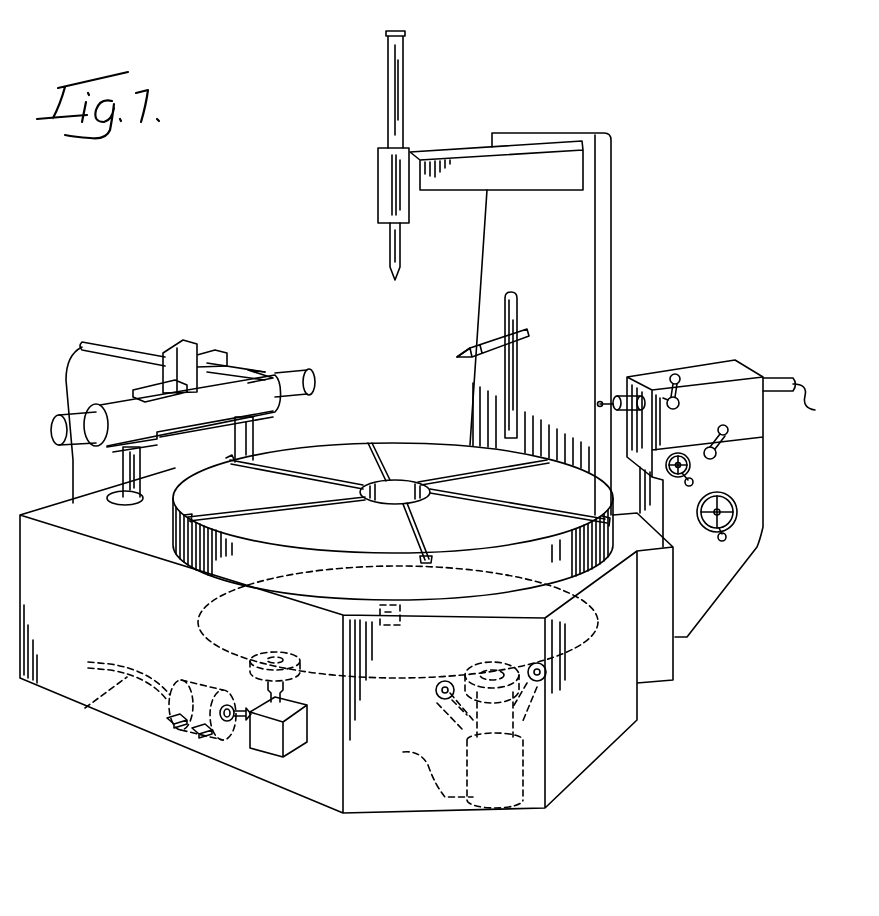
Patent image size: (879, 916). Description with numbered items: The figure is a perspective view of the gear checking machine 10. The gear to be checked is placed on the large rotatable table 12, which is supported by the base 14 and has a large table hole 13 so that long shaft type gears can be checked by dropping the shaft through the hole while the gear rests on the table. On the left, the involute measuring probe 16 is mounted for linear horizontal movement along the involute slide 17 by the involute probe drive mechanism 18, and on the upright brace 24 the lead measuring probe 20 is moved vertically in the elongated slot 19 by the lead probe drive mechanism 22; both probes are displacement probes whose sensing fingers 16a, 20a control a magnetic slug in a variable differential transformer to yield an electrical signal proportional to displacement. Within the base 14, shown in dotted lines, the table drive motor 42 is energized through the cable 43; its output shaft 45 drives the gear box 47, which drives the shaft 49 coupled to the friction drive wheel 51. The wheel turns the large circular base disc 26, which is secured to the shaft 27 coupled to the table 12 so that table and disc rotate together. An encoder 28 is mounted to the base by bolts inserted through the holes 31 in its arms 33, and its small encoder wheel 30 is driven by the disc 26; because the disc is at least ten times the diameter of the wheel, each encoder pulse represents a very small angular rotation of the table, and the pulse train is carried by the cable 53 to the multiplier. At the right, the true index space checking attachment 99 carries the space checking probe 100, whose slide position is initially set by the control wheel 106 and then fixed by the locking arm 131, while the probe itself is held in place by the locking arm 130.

The gear checking machine 10 is at (160, 742).
The table 12 is at (327, 445).
The table hole 13 is at (390, 500).
The base 14 is at (428, 806).
The involute measuring probe 16 is at (228, 366).
The sensing finger 16a is at (265, 378).
The involute slide 17 is at (160, 350).
The involute probe drive mechanism 18 is at (113, 407).
The elongated slot 19 is at (522, 333).
The lead measuring probe 20 is at (497, 338).
The sensing finger 20a is at (462, 365).
The lead probe drive mechanism 22 is at (538, 190).
The brace 24 is at (572, 320).
The base disc 26 is at (240, 600).
The shaft 27 is at (436, 620).
The encoder 28 is at (528, 806).
The encoder wheel 30 is at (450, 720).
The holes 31 is at (435, 690).
The arms 33 is at (462, 725).
The table drive motor 42 is at (170, 680).
The cable 43 is at (85, 704).
The output shaft 45 is at (200, 747).
The gear box 47 is at (263, 752).
The shaft 49 is at (250, 688).
The friction drive wheel 51 is at (267, 653).
The cable 53 is at (420, 773).
The true index space checking attachment 99 is at (722, 368).
The space checking probe 100 is at (623, 395).
The control wheel 106 is at (700, 467).
The locking arm 130 is at (670, 372).
The locking arm 131 is at (730, 432).